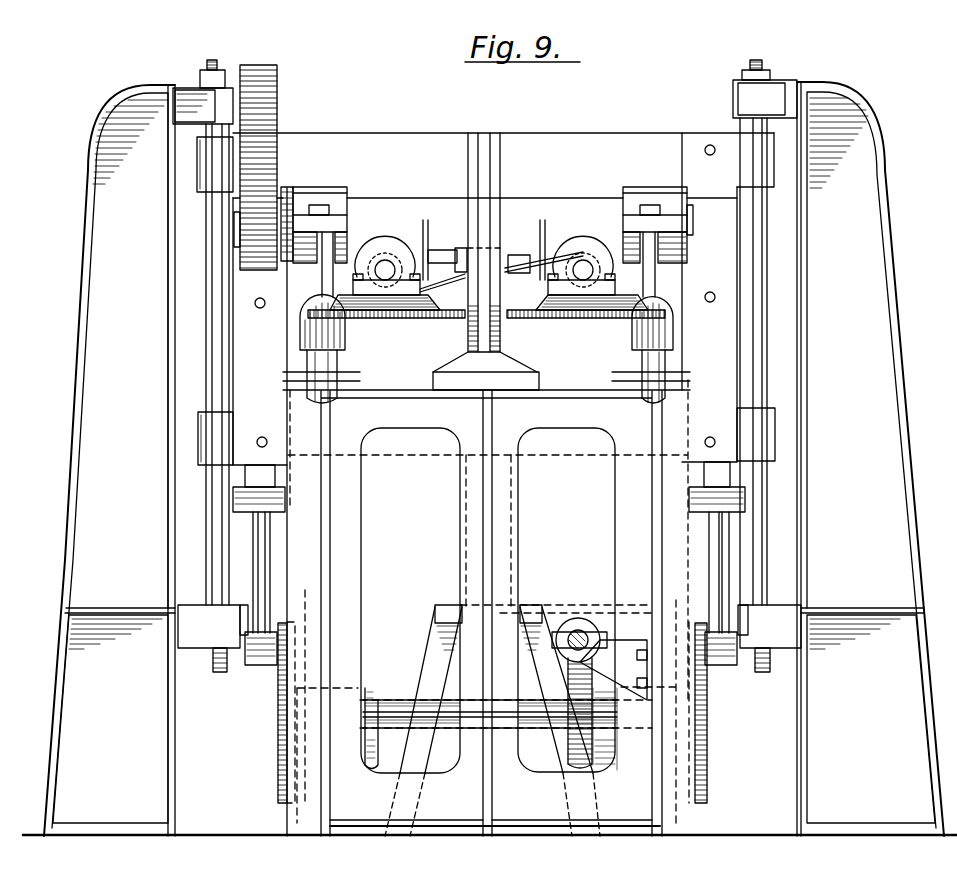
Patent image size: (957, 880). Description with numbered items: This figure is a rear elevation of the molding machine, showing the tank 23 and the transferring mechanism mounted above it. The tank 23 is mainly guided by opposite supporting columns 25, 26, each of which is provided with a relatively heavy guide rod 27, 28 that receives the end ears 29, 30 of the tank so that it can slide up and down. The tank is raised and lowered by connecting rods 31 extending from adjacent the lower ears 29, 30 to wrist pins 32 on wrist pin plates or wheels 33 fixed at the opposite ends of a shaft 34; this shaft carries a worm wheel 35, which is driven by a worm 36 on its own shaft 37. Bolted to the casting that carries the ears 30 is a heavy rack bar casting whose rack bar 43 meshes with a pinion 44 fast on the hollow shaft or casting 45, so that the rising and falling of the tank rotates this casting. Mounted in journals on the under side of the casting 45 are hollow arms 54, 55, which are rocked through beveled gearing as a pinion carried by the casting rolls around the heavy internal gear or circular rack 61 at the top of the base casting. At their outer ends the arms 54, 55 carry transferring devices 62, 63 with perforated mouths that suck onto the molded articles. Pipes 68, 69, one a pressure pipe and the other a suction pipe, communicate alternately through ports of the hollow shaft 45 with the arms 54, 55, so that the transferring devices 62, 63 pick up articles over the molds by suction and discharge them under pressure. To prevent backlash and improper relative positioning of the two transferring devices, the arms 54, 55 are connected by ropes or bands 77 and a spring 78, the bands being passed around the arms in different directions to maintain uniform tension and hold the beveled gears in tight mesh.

The tank 23 is at (383, 142).
The supporting column 25 is at (109, 460).
The supporting column 26 is at (870, 459).
The guide rod 27 is at (760, 295).
The guide rod 28 is at (213, 323).
The end ear 29 is at (762, 148).
The end ear 30 is at (207, 175).
The connecting rod 31 is at (270, 560).
The wrist pin 32 is at (258, 665).
The wrist pin plate 33 is at (278, 765).
The shaft 34 is at (392, 705).
The worm wheel 35 is at (577, 768).
The worm 36 is at (575, 617).
The shaft 37 is at (580, 630).
The rack bar 43 is at (272, 120).
The pinion 44 is at (287, 190).
The shaft or casting 45 is at (690, 225).
The hollow arm 54 is at (583, 258).
The hollow arm 55 is at (385, 258).
The internal gear or circular rack 61 is at (493, 152).
The transferring device 62 is at (592, 318).
The transferring device 63 is at (413, 318).
The pipe 68 is at (338, 400).
The pipe 69 is at (640, 400).
The ropes or bands 77 is at (447, 270).
The spring 78 is at (515, 245).